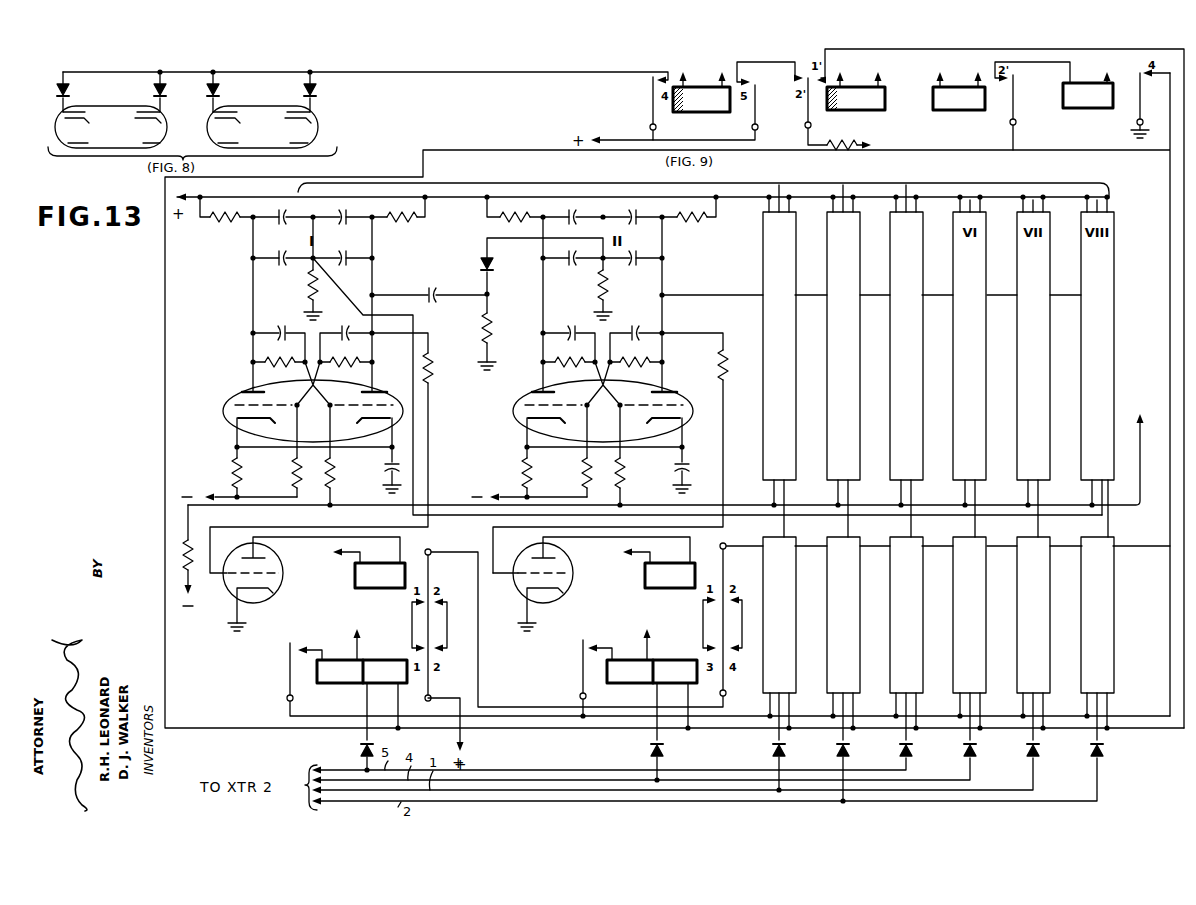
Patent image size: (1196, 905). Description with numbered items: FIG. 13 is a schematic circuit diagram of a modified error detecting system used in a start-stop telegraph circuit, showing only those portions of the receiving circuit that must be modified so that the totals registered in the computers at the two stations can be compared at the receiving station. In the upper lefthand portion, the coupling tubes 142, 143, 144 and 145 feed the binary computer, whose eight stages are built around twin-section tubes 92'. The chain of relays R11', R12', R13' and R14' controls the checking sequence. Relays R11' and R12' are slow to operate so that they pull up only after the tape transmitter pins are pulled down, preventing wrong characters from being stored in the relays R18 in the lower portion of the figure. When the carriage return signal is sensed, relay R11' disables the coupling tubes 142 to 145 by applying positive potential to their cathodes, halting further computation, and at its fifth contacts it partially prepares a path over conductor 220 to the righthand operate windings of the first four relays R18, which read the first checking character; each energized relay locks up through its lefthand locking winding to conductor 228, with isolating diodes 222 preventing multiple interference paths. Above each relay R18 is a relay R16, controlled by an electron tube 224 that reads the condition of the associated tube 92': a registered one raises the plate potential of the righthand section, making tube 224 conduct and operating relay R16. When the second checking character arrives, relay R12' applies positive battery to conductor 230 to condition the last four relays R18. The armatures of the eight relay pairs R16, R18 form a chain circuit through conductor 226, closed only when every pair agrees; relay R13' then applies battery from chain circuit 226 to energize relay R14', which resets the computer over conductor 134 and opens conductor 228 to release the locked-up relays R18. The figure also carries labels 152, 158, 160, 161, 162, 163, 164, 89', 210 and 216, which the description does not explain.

The rectifier diode 152 is at (74, 92).
The coupling tube 142 is at (57, 123).
The coupling tube 143 is at (165, 131).
The coupling tube 144 is at (166, 123).
The coupling tube 145 is at (319, 128).
The first filter stage network 160 is at (313, 197).
The second filter stage network 161 is at (603, 197).
The relay block III 162 is at (779, 190).
The relay block IV 163 is at (843, 190).
The relay block V 164 is at (906, 190).
The resistor 158 is at (858, 135).
The conductor 230 is at (897, 52).
The conductor 220 is at (534, 150).
The conductor (chain circuit) 226 is at (1170, 172).
The conductor 89' is at (707, 396).
The resistor 210 is at (433, 374).
The twin-section tube 92' is at (437, 435).
The conductor 134 is at (444, 517).
The resistor 216 is at (194, 593).
The electron tube 224 is at (283, 581).
The conductor 228 is at (290, 712).
The isolating diode 222 is at (362, 749).
The relay R11' is at (701, 92).
The relay R12' is at (856, 91).
The relay R13' is at (959, 91).
The relay R14' is at (1088, 90).
The relay R16 is at (713, 615).
The relay R18 is at (345, 683).